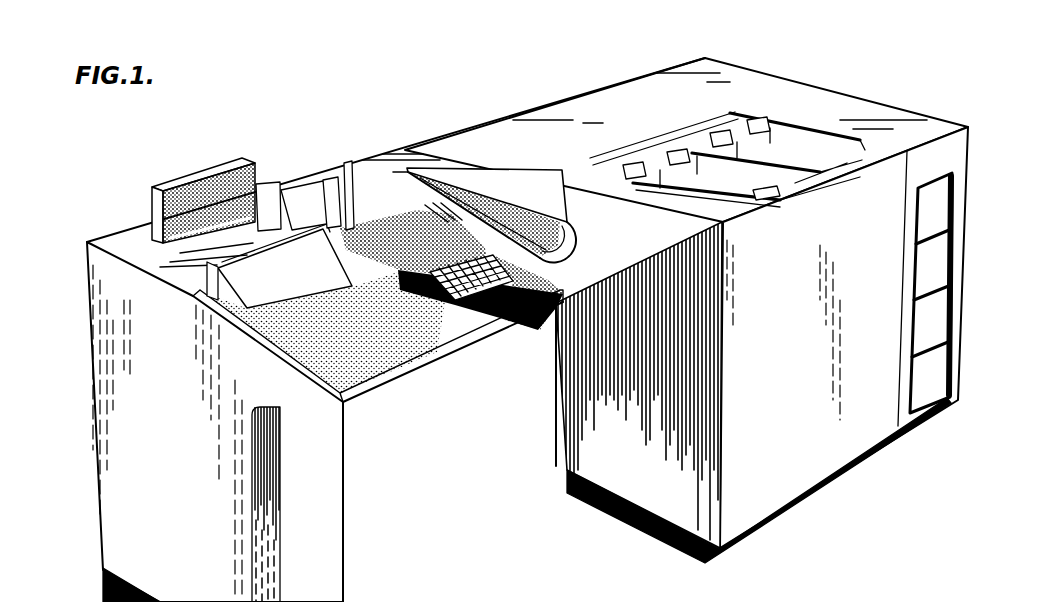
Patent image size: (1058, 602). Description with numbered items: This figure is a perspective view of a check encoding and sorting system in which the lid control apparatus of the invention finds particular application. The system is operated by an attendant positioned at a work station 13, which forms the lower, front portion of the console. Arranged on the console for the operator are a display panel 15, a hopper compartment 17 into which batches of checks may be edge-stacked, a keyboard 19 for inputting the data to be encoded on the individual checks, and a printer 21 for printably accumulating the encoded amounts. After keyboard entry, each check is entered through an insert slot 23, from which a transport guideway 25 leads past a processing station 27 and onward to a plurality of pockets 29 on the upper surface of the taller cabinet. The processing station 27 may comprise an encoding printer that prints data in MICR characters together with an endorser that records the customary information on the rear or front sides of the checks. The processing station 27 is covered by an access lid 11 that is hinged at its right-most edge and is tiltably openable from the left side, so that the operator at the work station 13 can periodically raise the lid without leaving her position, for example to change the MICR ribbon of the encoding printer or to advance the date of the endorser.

The access lid 11 is at (686, 237).
The work station 13 is at (530, 380).
The display panel 15 is at (257, 167).
The hopper compartment 17 is at (303, 309).
The keyboard 19 is at (493, 253).
The printer 21 is at (297, 196).
The insert slot 23 is at (230, 255).
The transport guideway 25 is at (350, 198).
The processing station 27 is at (567, 207).
The pockets 29 is at (847, 150).